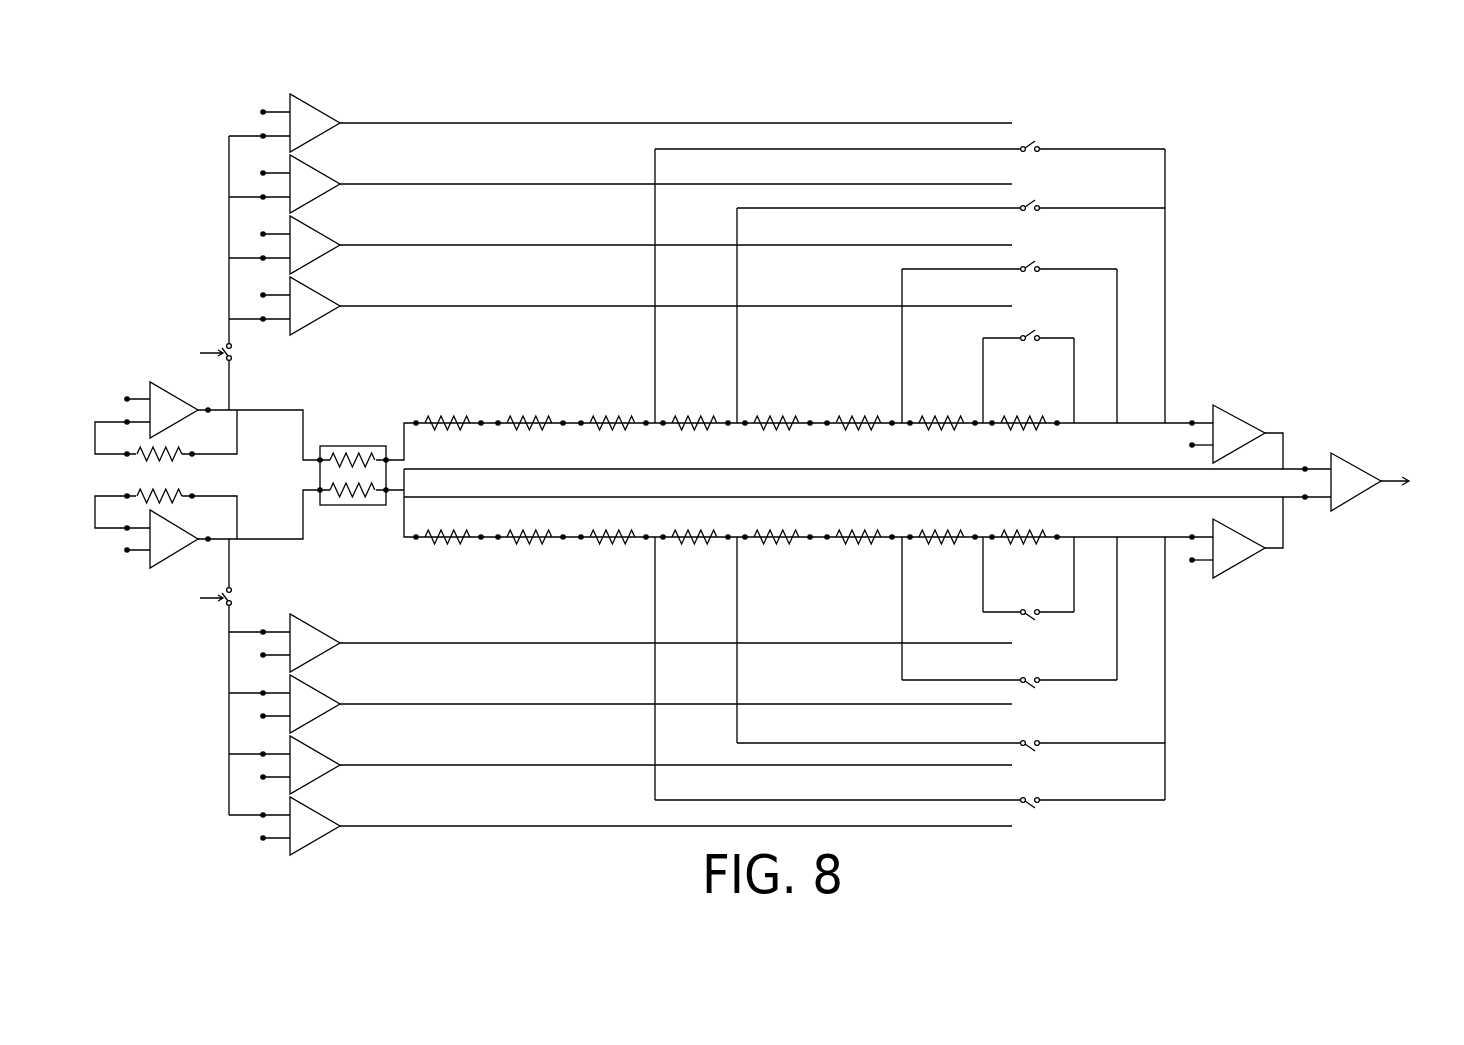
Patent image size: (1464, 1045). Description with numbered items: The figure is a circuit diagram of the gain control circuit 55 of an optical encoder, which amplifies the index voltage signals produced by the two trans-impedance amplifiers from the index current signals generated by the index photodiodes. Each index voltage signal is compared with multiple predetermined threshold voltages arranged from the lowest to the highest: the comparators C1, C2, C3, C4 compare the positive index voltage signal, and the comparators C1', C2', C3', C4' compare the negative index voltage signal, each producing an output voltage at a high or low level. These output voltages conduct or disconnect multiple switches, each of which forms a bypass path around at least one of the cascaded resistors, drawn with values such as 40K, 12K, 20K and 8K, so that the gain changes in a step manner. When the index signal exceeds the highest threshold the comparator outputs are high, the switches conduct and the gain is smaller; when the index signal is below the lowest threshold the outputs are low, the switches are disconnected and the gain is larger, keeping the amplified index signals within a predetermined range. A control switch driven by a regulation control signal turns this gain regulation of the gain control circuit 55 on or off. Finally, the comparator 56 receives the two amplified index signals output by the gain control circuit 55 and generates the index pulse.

The gain control circuit 55 is at (134, 86).
The comparator 56 is at (1378, 478).
The 20 kilo-ohm resistor 20K is at (600, 480).
The 40 kilo-ohm resistor 40K is at (736, 480).
The 12 kilo-ohm resistor 12K is at (530, 480).
The 8 kilo-ohm resistor 8K is at (776, 480).
The comparator C1 is at (315, 306).
The comparator C2 is at (315, 245).
The comparator C3 is at (315, 184).
The comparator C4 is at (315, 123).
The comparator C1' is at (315, 643).
The comparator C2' is at (315, 704).
The comparator C3' is at (315, 765).
The comparator C4' is at (315, 826).